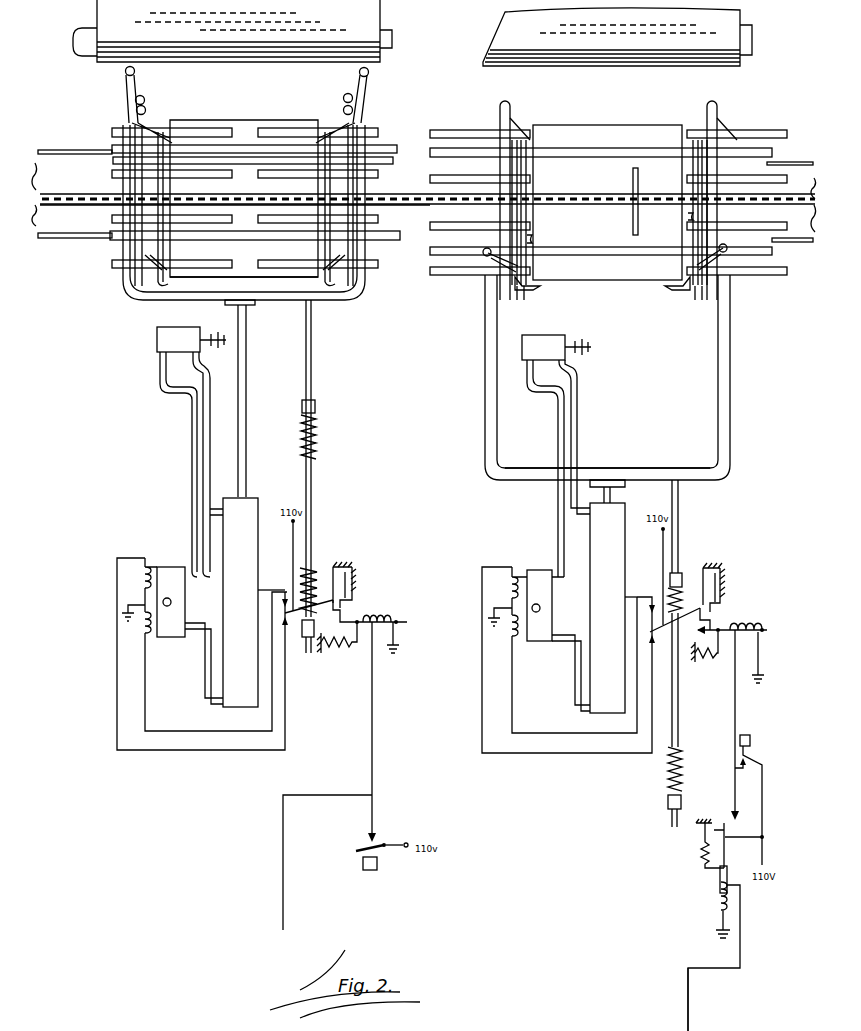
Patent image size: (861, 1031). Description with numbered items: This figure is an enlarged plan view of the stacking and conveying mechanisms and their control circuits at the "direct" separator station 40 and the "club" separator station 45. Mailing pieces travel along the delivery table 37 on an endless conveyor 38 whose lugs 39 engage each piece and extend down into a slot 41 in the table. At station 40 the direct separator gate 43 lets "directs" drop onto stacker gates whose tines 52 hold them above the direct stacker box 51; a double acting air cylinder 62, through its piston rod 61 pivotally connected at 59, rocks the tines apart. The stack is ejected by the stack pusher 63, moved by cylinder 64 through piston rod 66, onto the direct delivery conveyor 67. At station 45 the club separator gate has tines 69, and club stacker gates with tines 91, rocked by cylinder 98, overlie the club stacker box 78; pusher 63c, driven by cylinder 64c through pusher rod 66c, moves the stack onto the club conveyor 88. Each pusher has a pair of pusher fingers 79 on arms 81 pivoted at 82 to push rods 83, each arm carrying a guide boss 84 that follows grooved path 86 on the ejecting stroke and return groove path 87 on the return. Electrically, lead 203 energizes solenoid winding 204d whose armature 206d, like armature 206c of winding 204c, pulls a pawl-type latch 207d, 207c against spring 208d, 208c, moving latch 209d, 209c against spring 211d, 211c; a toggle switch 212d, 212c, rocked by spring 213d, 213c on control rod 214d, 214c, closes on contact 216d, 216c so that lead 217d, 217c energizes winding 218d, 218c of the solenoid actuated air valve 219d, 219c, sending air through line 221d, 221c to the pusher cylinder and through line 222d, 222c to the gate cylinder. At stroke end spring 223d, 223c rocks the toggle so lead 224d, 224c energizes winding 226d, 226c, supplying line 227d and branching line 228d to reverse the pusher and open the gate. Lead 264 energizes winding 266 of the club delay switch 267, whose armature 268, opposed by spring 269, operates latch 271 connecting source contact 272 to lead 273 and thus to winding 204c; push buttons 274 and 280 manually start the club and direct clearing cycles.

The direct separator station 40 is at (73, 102).
The club separator station 45 is at (470, 58).
The direct delivery conveyor 67 is at (380, 12).
The club conveyor 88 is at (750, 22).
The pusher fingers 79 is at (127, 125).
The guide boss 84 is at (145, 110).
The tines 52 is at (270, 130).
The direct separator gate 43 is at (383, 162).
The tines 91 is at (777, 182).
The grooved path 86 is at (694, 215).
The endless conveyor 38 is at (62, 194).
The lugs 39 is at (273, 188).
The slot 41 is at (90, 203).
The delivery table 37 is at (50, 230).
The tines 69 is at (112, 260).
The return groove path 87 is at (512, 113).
The push rods 83 is at (484, 390).
The club stacker box 78 is at (603, 281).
The pivot connection 82 is at (487, 256).
The arms 81 is at (520, 300).
The direct stacker box 51 is at (256, 304).
The stack pusher 63 is at (298, 290).
The pusher 63c is at (647, 466).
The piston rod 66 is at (246, 442).
The pusher rod 66c is at (615, 493).
The piston rod 61 is at (178, 339).
The pivot connection 59 is at (227, 334).
The double acting air cylinder 62 is at (157, 341).
The double acting air cylinder 98 is at (552, 334).
The branching line 228d is at (193, 460).
The line 222d is at (208, 480).
The line 222c is at (577, 416).
The line 227d is at (212, 552).
The double acting air cylinder 64 is at (258, 556).
The double acting air cylinder 64c is at (610, 565).
The solenoid actuated air valve 219d is at (167, 570).
The solenoid actuated air valve 219c is at (538, 575).
The solenoid winding 226d is at (142, 575).
The solenoid winding 226c is at (510, 583).
The solenoid winding 218d is at (140, 630).
The solenoid winding 218c is at (512, 648).
The lead 224d is at (208, 752).
The lead 224c is at (590, 753).
The lead 217d is at (202, 733).
The lead 217c is at (557, 750).
The contact 216d is at (282, 596).
The contact 216c is at (653, 603).
The line 221d is at (207, 680).
The line 221c is at (573, 698).
The control rod 214d is at (313, 478).
The control rod 214c is at (679, 732).
The spring 213d is at (316, 435).
The spring 213c is at (683, 570).
The toggle switch arm 212d is at (315, 575).
The toggle switch 212c is at (700, 578).
The spring 223d is at (304, 620).
The spring 223c is at (665, 798).
The spring 211d is at (353, 576).
The spring 211c is at (722, 561).
The latch 209d is at (338, 597).
The latch 209c is at (707, 603).
The pawl-type latch 207d is at (355, 624).
The pawl-type latch 207c is at (715, 630).
The armature 206d is at (400, 619).
The solenoid armature 206c is at (764, 631).
The solenoid winding 204d is at (398, 633).
The solenoid winding 204c is at (762, 645).
The spring 208d is at (345, 658).
The spring 208c is at (709, 664).
The lead 203 is at (284, 857).
The push button 280 is at (372, 872).
The lead 273 is at (740, 790).
The push button 274 is at (752, 740).
The source contact 272 is at (745, 838).
The latch 271 is at (724, 828).
The spring 269 is at (703, 850).
The club delay switch 267 is at (701, 891).
The winding 266 is at (717, 908).
The armature 268 is at (727, 885).
The lead 264 is at (689, 1013).